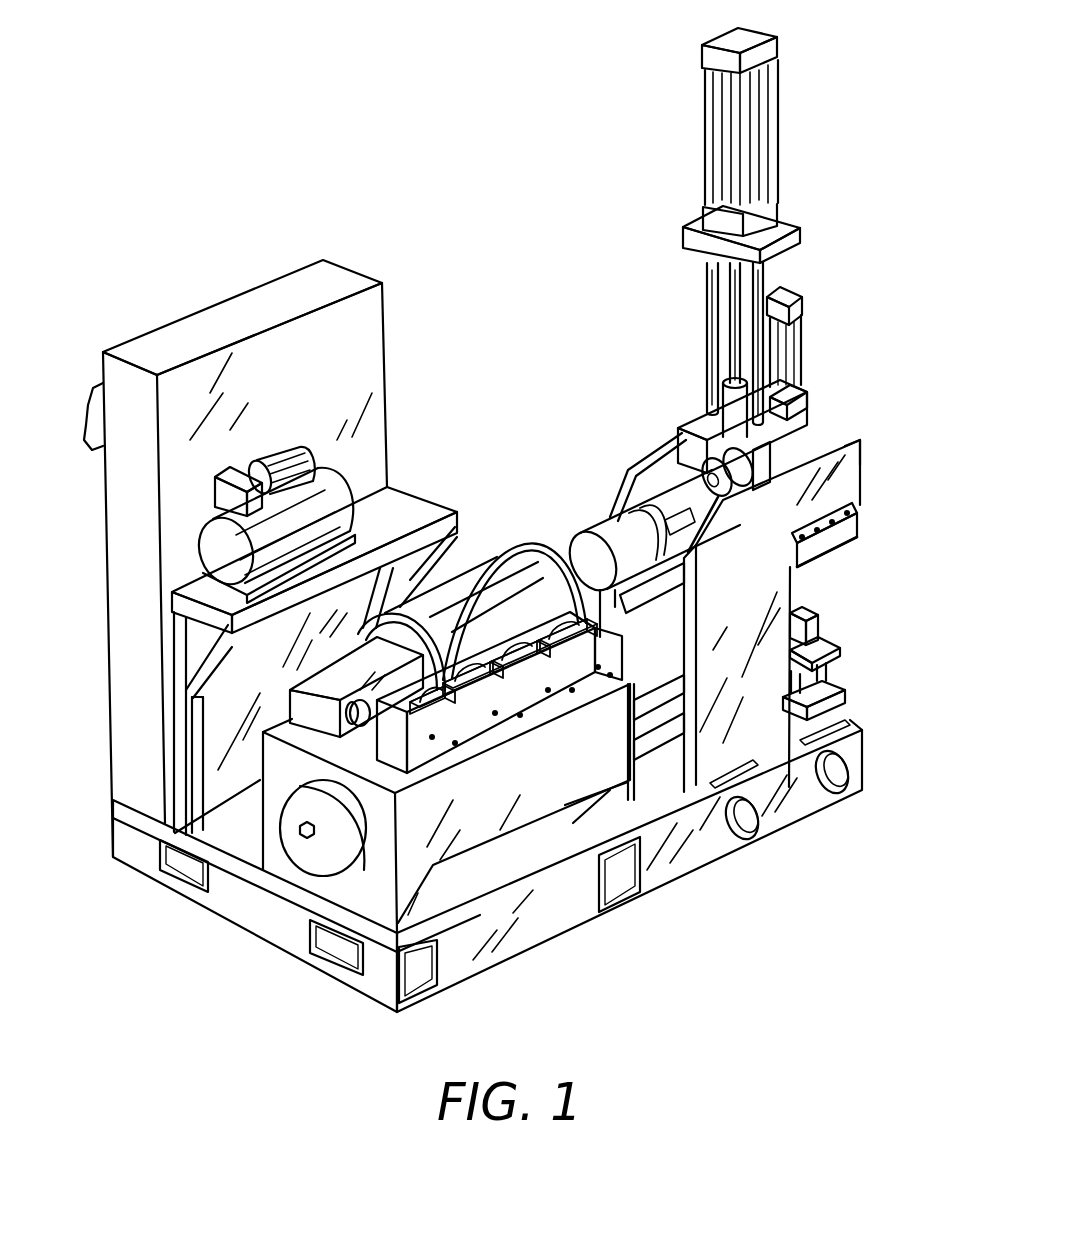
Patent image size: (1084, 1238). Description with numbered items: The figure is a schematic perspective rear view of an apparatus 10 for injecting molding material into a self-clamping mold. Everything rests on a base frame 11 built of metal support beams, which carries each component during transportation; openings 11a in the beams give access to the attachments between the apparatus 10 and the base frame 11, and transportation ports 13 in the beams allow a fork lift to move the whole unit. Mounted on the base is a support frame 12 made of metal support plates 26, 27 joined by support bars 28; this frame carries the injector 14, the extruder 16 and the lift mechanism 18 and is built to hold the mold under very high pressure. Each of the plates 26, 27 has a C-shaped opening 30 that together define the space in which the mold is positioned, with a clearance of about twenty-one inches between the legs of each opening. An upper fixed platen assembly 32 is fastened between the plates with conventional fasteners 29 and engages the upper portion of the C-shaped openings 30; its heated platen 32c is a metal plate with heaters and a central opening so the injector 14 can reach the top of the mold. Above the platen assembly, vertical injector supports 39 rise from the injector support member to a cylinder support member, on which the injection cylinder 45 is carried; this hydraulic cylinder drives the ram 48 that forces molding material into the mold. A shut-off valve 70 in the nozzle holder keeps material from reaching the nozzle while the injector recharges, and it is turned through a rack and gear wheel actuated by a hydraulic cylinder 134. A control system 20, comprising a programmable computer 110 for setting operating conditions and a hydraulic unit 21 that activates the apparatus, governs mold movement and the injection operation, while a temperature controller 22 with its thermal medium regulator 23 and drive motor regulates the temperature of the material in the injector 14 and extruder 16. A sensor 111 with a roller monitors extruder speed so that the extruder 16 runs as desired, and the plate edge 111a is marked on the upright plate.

The apparatus 10 is at (500, 520).
The base frame 11 is at (495, 932).
The openings 11a is at (742, 833).
The support frame 12 is at (827, 700).
The transportation ports 13 is at (337, 948).
The injector 14 is at (728, 232).
The extruder 16 is at (583, 520).
The lift mechanism 18 is at (837, 627).
The control system 20 is at (271, 534).
The hydraulic unit 21 is at (560, 877).
The temperature controller 22 is at (353, 457).
The thermal medium regulator 23 is at (318, 452).
The support plate 26 is at (860, 447).
The support plate 27 is at (615, 480).
The support bars 28 is at (672, 603).
The fasteners 29 is at (850, 514).
The C-shaped openings 30 is at (798, 582).
The upper fixed platen assembly 32 is at (854, 551).
The heated platen 32c is at (860, 533).
The vertical injector supports 39 is at (700, 310).
The injection cylinder 45 is at (775, 98).
The ram 48 is at (680, 425).
The shut-off valve 70 is at (800, 340).
The programmable computer 110 is at (332, 283).
The sensor 111 is at (800, 593).
The plate edge 111a is at (717, 517).
The hydraulic cylinder 134 is at (773, 287).